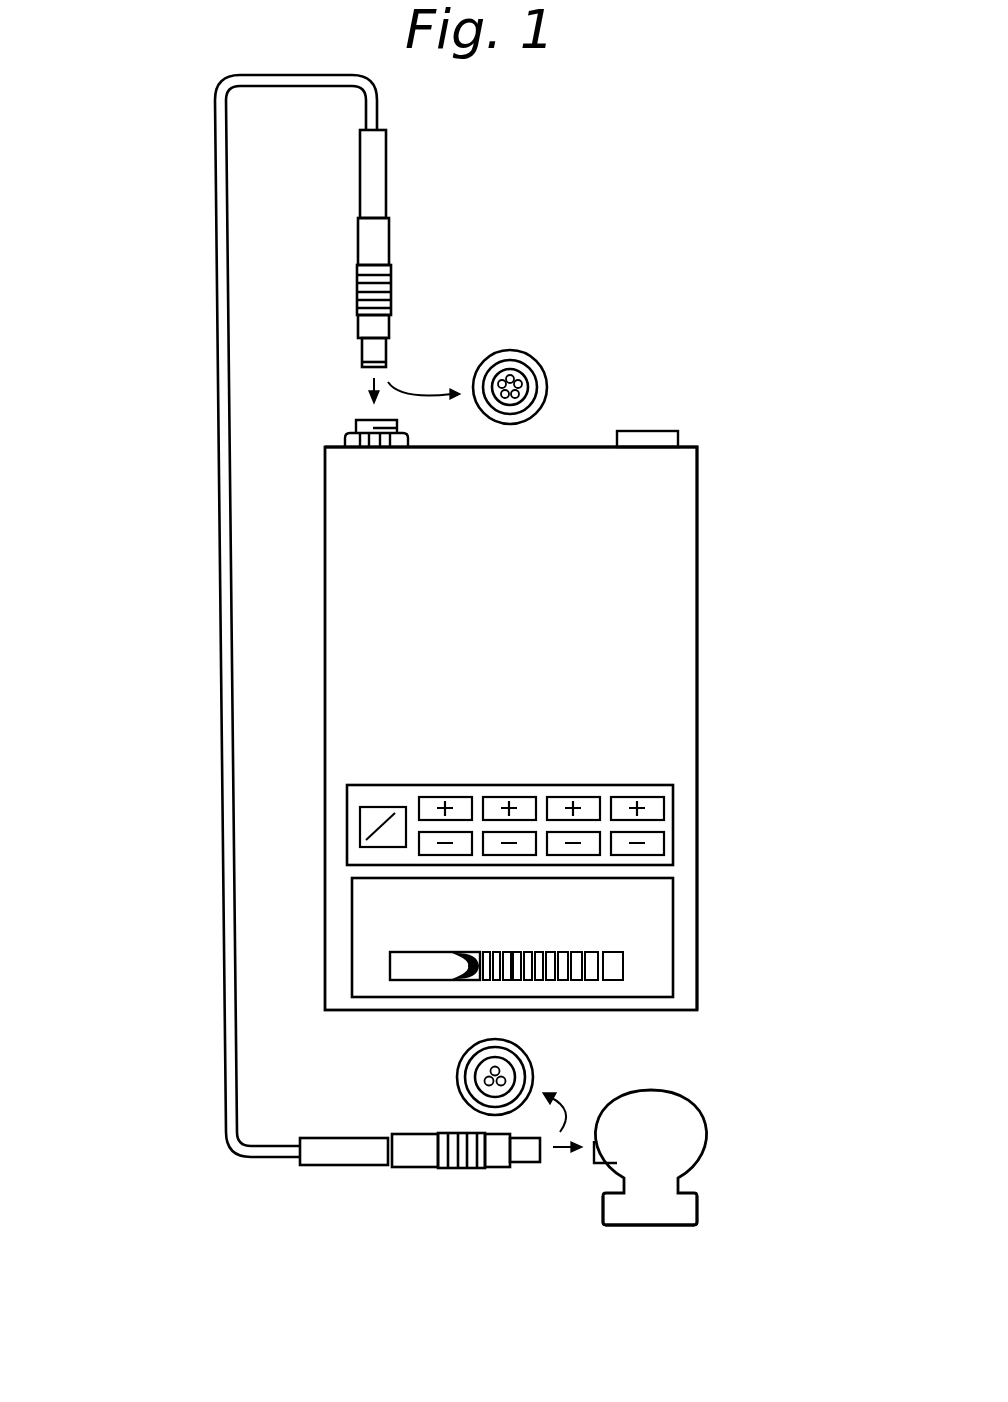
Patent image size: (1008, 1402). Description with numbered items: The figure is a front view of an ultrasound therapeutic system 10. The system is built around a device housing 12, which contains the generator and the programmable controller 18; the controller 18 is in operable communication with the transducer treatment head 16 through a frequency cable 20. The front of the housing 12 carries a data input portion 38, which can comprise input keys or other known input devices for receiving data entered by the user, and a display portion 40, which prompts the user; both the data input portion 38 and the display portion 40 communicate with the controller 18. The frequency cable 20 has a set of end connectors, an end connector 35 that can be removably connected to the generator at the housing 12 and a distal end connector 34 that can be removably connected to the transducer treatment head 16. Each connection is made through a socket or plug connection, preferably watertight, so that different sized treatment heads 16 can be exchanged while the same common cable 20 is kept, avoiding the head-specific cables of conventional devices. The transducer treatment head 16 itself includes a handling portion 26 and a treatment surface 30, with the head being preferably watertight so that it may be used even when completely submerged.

The ultrasound therapeutic system 10 is at (572, 660).
The device housing 12 is at (700, 493).
The transducer treatment head 16 is at (662, 1164).
The programmable controller 18 is at (668, 670).
The frequency cable 20 is at (216, 238).
The handling portion 26 is at (626, 1090).
The treatment surface 30 is at (630, 1227).
The distal end connector 34 is at (458, 1072).
The end connector 35 is at (392, 321).
The data input portion 38 is at (400, 795).
The display portion 40 is at (658, 947).